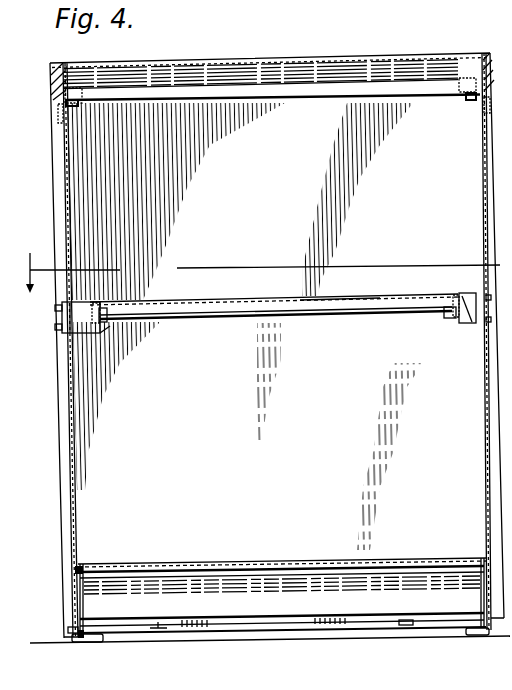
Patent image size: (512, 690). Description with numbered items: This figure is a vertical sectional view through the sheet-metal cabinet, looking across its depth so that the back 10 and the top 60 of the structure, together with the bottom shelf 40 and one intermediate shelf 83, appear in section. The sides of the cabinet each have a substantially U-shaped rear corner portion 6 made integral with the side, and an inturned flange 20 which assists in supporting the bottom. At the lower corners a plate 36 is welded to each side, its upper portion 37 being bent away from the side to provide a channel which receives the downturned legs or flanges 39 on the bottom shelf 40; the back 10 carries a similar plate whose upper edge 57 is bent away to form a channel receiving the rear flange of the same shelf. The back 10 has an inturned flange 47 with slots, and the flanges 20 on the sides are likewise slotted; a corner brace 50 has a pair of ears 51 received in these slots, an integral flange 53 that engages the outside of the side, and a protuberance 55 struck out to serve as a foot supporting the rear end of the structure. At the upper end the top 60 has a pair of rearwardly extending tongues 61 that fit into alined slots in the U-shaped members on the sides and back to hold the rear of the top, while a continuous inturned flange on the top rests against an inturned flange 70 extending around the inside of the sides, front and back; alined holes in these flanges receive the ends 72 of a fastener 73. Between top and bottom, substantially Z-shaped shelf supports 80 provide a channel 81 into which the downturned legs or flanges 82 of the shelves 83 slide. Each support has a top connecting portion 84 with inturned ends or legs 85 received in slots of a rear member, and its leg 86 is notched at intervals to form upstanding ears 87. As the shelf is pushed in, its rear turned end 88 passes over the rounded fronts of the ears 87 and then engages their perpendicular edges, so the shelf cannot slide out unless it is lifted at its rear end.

The rear corner portion 6 is at (52, 185).
The back 10 is at (289, 326).
The inturned flange 20 is at (80, 643).
The plate 36 is at (86, 601).
The upper portion 37 is at (90, 567).
The downturned legs or flanges 39 is at (76, 572).
The bottom shelf 40 is at (353, 559).
The inturned flange 47 is at (346, 636).
The corner brace 50 is at (127, 641).
The ears 51 is at (93, 628).
The integral flange 53 is at (68, 630).
The protuberance 55 is at (100, 645).
The upper edge 57 is at (258, 558).
The top 60 is at (329, 58).
The rearwardly extending tongues 61 is at (56, 115).
The inturned flange 70 is at (58, 90).
The ends 72 is at (72, 88).
The fastener 73 is at (72, 104).
The shelf supports 80 is at (75, 296).
The channel 81 is at (100, 299).
The downturned legs or flanges 82 is at (153, 301).
The shelves 83 is at (339, 297).
The top connecting portion 84 is at (93, 296).
The inturned ends or legs 85 is at (63, 327).
The leg 86 is at (446, 315).
The upstanding ears 87 is at (115, 321).
The rear turned end 88 is at (296, 318).